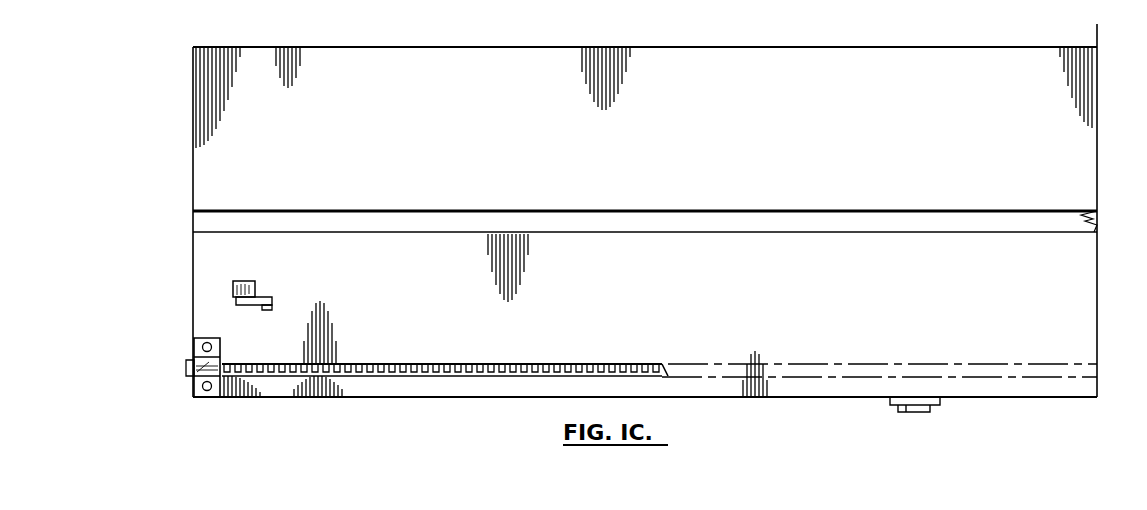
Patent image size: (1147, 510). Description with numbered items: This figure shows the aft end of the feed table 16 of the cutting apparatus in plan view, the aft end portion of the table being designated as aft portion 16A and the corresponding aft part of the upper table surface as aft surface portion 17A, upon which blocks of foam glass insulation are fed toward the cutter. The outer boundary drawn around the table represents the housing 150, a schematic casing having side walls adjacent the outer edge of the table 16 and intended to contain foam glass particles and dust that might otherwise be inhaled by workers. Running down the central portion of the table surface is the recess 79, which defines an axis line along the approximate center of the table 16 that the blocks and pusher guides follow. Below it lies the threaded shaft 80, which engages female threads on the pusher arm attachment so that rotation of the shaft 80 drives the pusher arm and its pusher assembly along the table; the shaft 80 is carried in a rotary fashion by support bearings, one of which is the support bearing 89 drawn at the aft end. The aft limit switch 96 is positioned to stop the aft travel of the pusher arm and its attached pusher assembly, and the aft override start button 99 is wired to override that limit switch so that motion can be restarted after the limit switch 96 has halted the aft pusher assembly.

The housing 150 is at (893, 48).
The upper feed table 16 is at (1042, 46).
The aft portion of table 16A is at (193, 95).
The aft surface portion 17A is at (228, 171).
The recess 79 is at (850, 228).
The shaft 80 is at (604, 362).
The support bearing 89 is at (187, 376).
The aft limit switch 96 is at (238, 280).
The aft override start button 99 is at (912, 412).